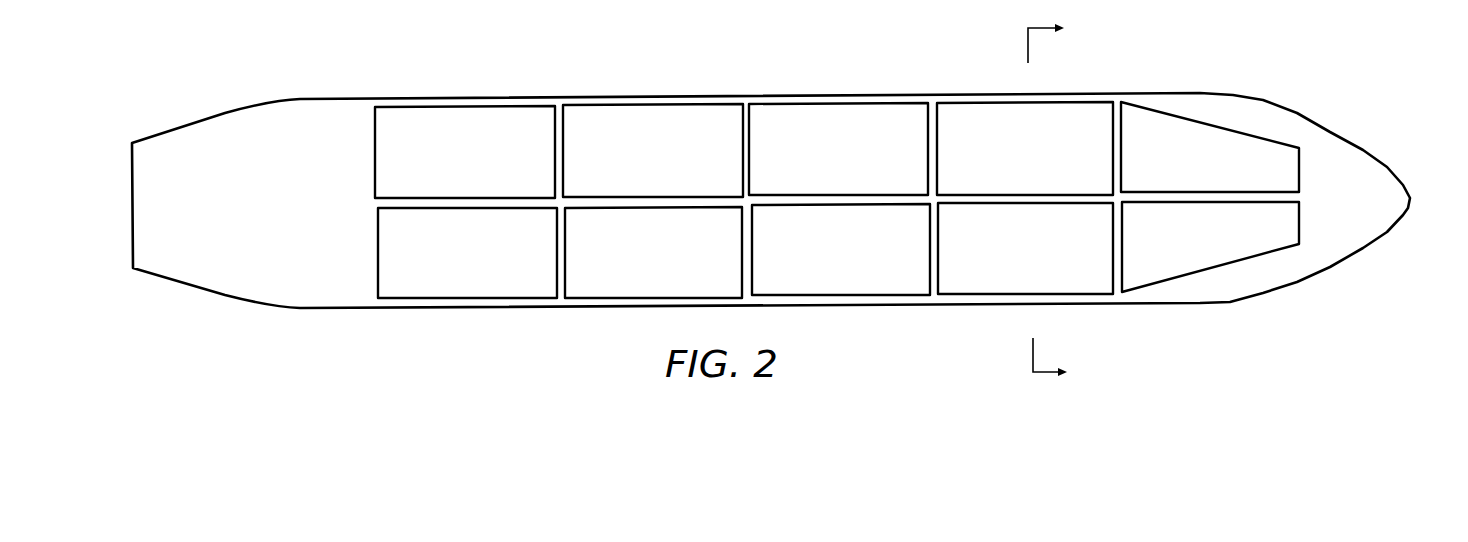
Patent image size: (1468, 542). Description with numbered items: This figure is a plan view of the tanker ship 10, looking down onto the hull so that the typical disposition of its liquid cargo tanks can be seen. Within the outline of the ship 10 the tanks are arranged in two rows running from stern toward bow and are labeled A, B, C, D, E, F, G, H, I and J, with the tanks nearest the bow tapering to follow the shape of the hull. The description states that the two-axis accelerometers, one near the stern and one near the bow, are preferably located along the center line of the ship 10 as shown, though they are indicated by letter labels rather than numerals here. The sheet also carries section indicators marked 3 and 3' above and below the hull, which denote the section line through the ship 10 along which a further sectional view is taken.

The tanker ship 10 is at (875, 69).
The section line 3 is at (1054, 42).
The section line 3' is at (1060, 363).